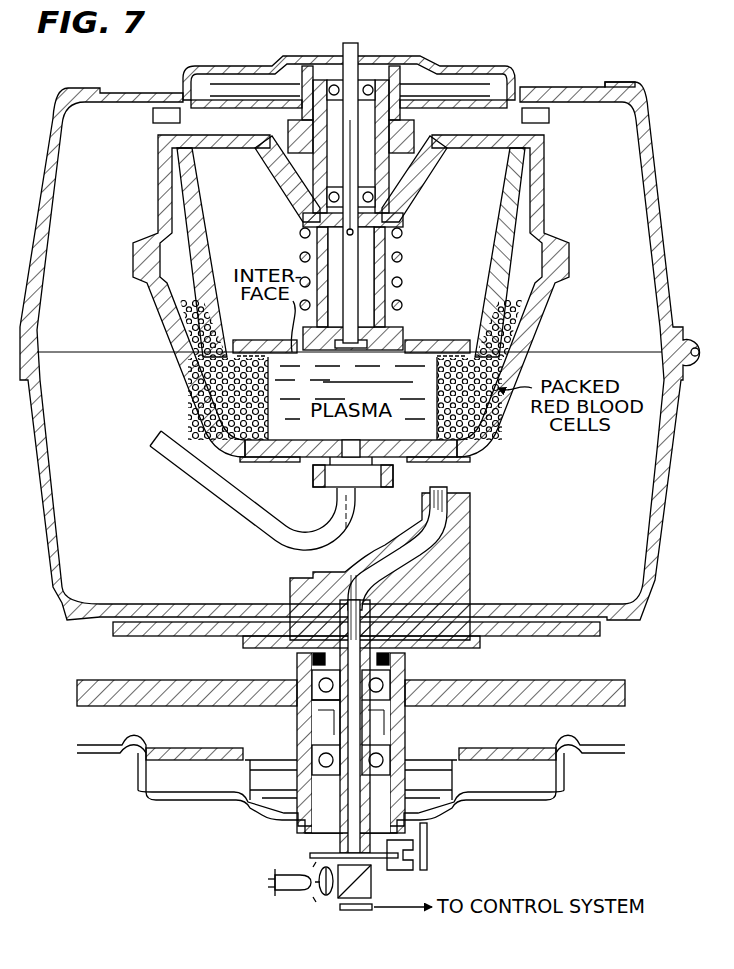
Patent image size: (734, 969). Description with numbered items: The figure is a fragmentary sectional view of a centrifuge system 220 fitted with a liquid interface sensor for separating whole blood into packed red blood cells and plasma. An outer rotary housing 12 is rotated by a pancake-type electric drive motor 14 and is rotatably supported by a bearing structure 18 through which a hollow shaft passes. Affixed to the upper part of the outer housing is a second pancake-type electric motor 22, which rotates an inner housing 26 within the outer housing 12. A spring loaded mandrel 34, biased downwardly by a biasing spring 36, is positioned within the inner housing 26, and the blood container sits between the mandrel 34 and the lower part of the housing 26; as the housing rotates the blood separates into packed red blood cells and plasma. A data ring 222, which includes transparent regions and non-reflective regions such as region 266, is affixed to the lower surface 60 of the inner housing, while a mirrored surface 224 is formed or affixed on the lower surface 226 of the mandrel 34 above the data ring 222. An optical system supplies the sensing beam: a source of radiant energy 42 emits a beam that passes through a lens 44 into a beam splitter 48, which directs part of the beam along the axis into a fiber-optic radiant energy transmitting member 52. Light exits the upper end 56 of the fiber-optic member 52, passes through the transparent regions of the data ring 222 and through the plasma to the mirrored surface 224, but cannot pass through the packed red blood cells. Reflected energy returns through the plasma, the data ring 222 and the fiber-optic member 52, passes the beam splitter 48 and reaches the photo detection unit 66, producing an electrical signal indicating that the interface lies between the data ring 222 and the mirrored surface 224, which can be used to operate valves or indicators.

The outer rotary housing 12 is at (661, 170).
The electric drive motor 14 is at (131, 798).
The bearing structure 18 is at (296, 665).
The second pancake-type electric motor 22 is at (470, 58).
The inner housing 26 is at (548, 176).
The spring loaded mandrel 34 is at (497, 284).
The biasing spring 36 is at (400, 247).
The source of radiant energy 42 is at (289, 886).
The lens 44 is at (326, 896).
The beam splitter 48 is at (372, 881).
The fiber-optic radiant energy transmitting member 52 is at (316, 580).
The upper end of fiber-optic member 56 is at (446, 486).
The lower surface of housing member 60 is at (300, 468).
The photo detection unit 66 is at (356, 911).
The system 220 is at (628, 80).
The data ring 222 is at (470, 460).
The mirrored surface 224 is at (421, 357).
The lower surface of mandrel 226 is at (352, 398).
The non-reflective region 266 is at (190, 383).